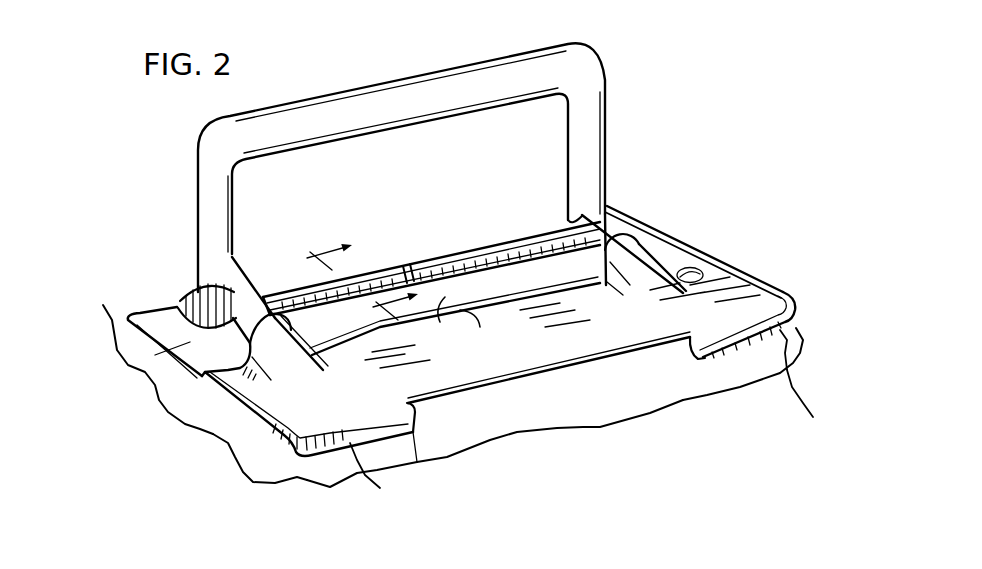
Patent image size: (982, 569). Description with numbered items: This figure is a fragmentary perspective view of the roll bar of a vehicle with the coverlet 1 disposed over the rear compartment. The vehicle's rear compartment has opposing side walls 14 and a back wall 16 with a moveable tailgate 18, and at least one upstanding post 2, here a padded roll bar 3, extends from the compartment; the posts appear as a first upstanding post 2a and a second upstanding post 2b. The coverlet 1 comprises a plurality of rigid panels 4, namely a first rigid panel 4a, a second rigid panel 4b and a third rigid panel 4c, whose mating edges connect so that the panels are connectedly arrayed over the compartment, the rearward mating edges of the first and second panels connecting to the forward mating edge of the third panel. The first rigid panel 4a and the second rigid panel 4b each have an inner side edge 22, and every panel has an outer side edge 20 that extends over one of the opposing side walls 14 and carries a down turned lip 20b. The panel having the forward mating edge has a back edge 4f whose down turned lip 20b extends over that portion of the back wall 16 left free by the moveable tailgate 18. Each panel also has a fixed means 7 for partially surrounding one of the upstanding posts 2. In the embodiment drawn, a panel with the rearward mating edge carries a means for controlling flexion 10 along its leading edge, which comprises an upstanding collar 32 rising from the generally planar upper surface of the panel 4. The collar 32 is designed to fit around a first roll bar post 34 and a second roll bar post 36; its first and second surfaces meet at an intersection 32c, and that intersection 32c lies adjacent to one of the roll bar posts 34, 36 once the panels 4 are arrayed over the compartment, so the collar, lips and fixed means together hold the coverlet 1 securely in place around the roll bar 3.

The coverlet 1 is at (746, 140).
The upstanding post 2 is at (250, 298).
The first upstanding post 2a is at (247, 282).
The second upstanding post 2b is at (612, 207).
The padded roll bar 3 is at (606, 100).
The rigid panel 4 is at (167, 318).
The first rigid panel 4a is at (195, 343).
The second rigid panel 4b is at (697, 252).
The third rigid panel 4c is at (760, 303).
The back edge 4f is at (380, 488).
The fixed means for partially surrounding an upstanding post 7 is at (300, 337).
The means for controlling flexion 10 is at (487, 228).
The opposing side walls 14 is at (253, 457).
The back wall 16 is at (413, 463).
The moveable tailgate 18 is at (600, 409).
The outer side edge 20 is at (155, 355).
The down turned lip 20b is at (415, 432).
The inner side edge 22 is at (462, 305).
The upstanding collar 32 is at (369, 260).
The intersection 32c is at (617, 217).
The first roll bar post 34 is at (197, 285).
The second roll bar post 36 is at (565, 202).